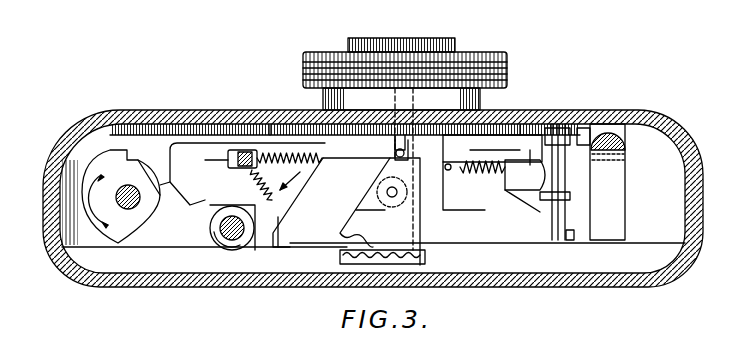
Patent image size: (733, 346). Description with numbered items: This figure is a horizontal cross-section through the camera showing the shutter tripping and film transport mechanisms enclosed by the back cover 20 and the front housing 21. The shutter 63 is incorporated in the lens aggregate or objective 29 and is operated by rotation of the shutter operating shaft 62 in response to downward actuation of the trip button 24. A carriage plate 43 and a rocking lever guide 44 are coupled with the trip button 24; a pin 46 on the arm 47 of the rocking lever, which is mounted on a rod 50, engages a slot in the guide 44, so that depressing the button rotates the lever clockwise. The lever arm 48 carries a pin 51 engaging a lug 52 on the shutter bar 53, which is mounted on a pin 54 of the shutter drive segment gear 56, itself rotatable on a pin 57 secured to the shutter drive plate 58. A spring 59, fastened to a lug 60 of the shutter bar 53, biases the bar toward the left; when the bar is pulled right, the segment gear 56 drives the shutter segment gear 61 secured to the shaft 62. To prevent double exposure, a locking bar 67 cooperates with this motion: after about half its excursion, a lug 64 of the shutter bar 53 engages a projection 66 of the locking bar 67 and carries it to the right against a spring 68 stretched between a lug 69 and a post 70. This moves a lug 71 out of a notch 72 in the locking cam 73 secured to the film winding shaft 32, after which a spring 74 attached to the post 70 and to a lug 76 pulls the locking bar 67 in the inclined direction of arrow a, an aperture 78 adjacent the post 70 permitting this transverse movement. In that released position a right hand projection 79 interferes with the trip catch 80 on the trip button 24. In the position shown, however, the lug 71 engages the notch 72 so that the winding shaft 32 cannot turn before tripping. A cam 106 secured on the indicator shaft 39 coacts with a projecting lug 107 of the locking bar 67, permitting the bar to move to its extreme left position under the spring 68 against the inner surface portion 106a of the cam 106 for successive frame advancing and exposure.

The back cover 20 is at (490, 287).
The front housing 21 is at (528, 110).
The trip button 24 is at (622, 142).
The lens aggregate or objective 29 is at (455, 40).
The film winding shaft 32 is at (212, 240).
The indicator shaft 39 is at (137, 193).
The carriage plate 43 is at (615, 210).
The rocking lever guide 44 is at (625, 156).
The pin 46 is at (566, 185).
The arm of rocking lever 47 is at (622, 165).
The lever arm 48 is at (552, 200).
The rod 50 is at (567, 225).
The pin 51 is at (525, 178).
The lug 52 is at (518, 207).
The shutter bar 53 is at (470, 210).
The pin 54 is at (387, 194).
The shutter drive segment gear 56 is at (354, 212).
The pin 57 is at (408, 125).
The shutter drive plate 58 is at (492, 147).
The spring 59 is at (455, 170).
The lug 60 is at (482, 179).
The shutter segment gear 61 is at (340, 259).
The shutter operating shaft 62 is at (394, 100).
The shutter 63 is at (507, 64).
The lug 64 is at (495, 144).
The projection 66 is at (525, 149).
The locking bar 67 is at (280, 125).
The spring 68 is at (300, 175).
The lug 69 is at (385, 157).
The post 70 is at (243, 150).
The lug 71 is at (273, 247).
The notch 72 is at (244, 248).
The locking cam 73 is at (210, 230).
The spring 74 is at (252, 175).
The lug 76 is at (278, 224).
The aperture 78 is at (208, 159).
The right hand projection 79 is at (558, 128).
The trip catch 80 is at (584, 128).
The cam 106 is at (124, 155).
The inner surface portion of cam 106a is at (145, 165).
The projecting lug 107 is at (180, 200).
The arrow a is at (290, 180).